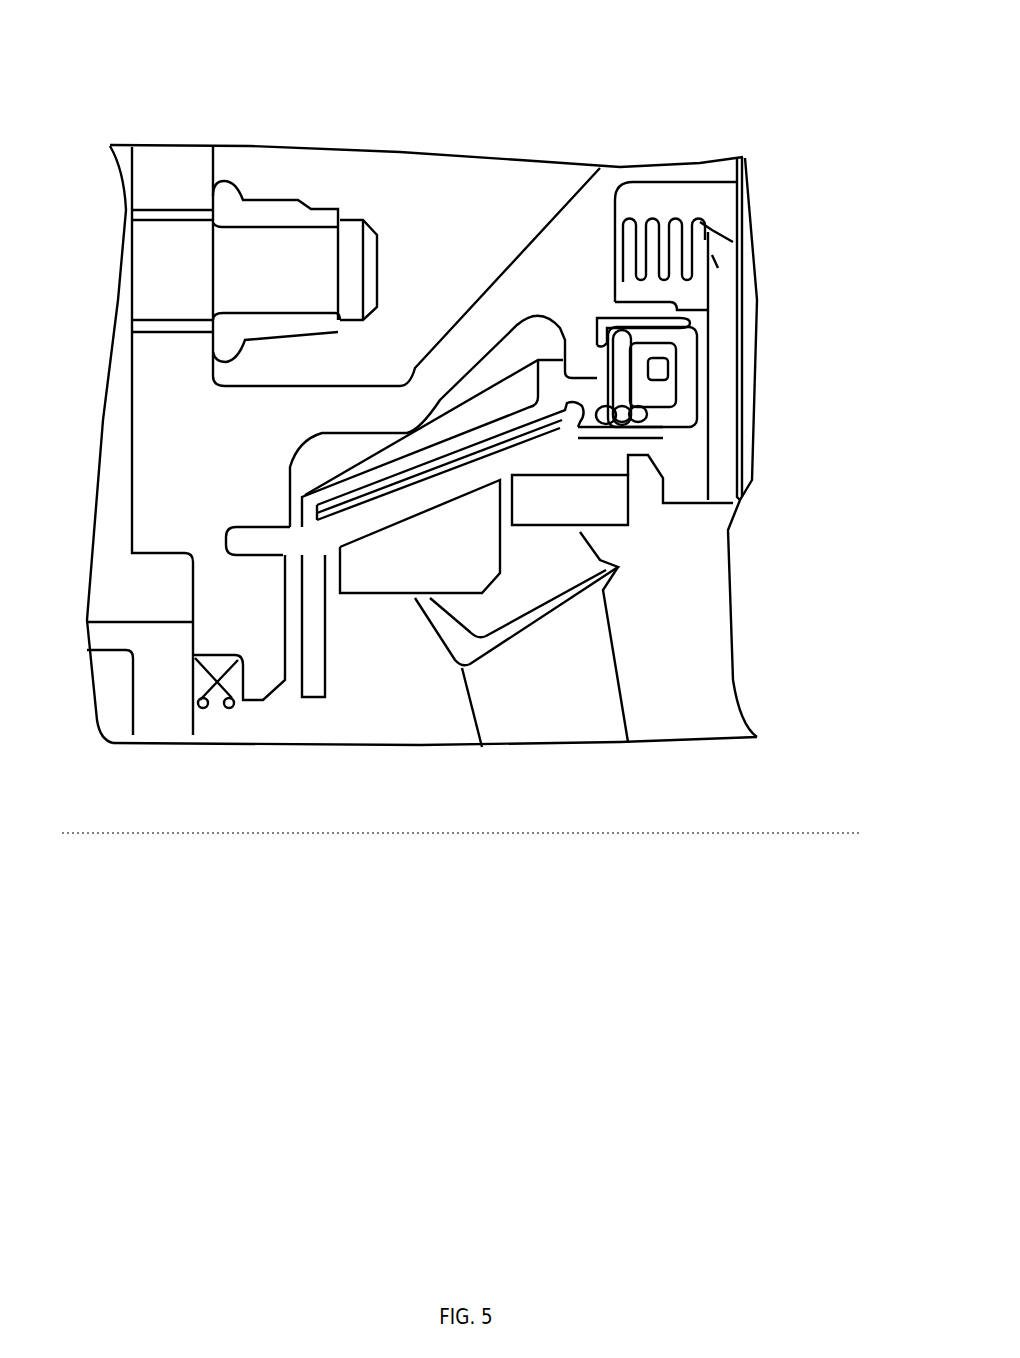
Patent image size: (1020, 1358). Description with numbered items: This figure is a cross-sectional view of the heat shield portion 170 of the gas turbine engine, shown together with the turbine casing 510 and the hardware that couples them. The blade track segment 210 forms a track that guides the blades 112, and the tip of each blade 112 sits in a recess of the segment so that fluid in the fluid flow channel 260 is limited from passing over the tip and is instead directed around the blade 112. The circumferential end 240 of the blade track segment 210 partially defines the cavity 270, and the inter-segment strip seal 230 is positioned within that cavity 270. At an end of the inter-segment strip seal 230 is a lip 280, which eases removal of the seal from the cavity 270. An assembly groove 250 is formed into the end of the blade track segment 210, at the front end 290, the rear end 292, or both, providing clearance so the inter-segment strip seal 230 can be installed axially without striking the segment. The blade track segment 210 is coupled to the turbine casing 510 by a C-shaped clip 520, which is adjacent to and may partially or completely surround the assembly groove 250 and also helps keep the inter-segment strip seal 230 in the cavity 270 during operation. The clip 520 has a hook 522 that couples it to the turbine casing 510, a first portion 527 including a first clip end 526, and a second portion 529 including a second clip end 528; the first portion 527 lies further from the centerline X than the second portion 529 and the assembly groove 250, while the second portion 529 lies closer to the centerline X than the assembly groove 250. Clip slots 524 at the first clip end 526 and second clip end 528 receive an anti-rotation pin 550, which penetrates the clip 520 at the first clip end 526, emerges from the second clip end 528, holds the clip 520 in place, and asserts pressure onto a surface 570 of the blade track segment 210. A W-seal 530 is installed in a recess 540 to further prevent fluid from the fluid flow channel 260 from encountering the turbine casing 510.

The heat shield portion 170 is at (440, 135).
The turbine casing 510 is at (403, 395).
The hook 522 is at (595, 318).
The anti-rotation pin 550 is at (618, 340).
The W-seal 530 is at (652, 220).
The first clip end 526 is at (678, 332).
The recess 540 is at (690, 301).
The first portion 527 is at (680, 338).
The rear end 292 is at (663, 363).
The assembly groove 250 is at (635, 397).
The clip 520 is at (700, 395).
The second portion 529 is at (690, 423).
The second clip end 528 is at (677, 427).
The clip slots 524 is at (660, 440).
The surface 570 is at (603, 455).
The blade track segment 210 is at (493, 440).
The lip 280 is at (545, 364).
The circumferential end 240 is at (583, 393).
The inter-segment strip seal 230 is at (417, 480).
The cavity 270 is at (338, 500).
The front end 290 is at (302, 510).
The fluid flow channel 260 is at (405, 688).
The blade 112 is at (553, 733).
The centerline X is at (243, 840).